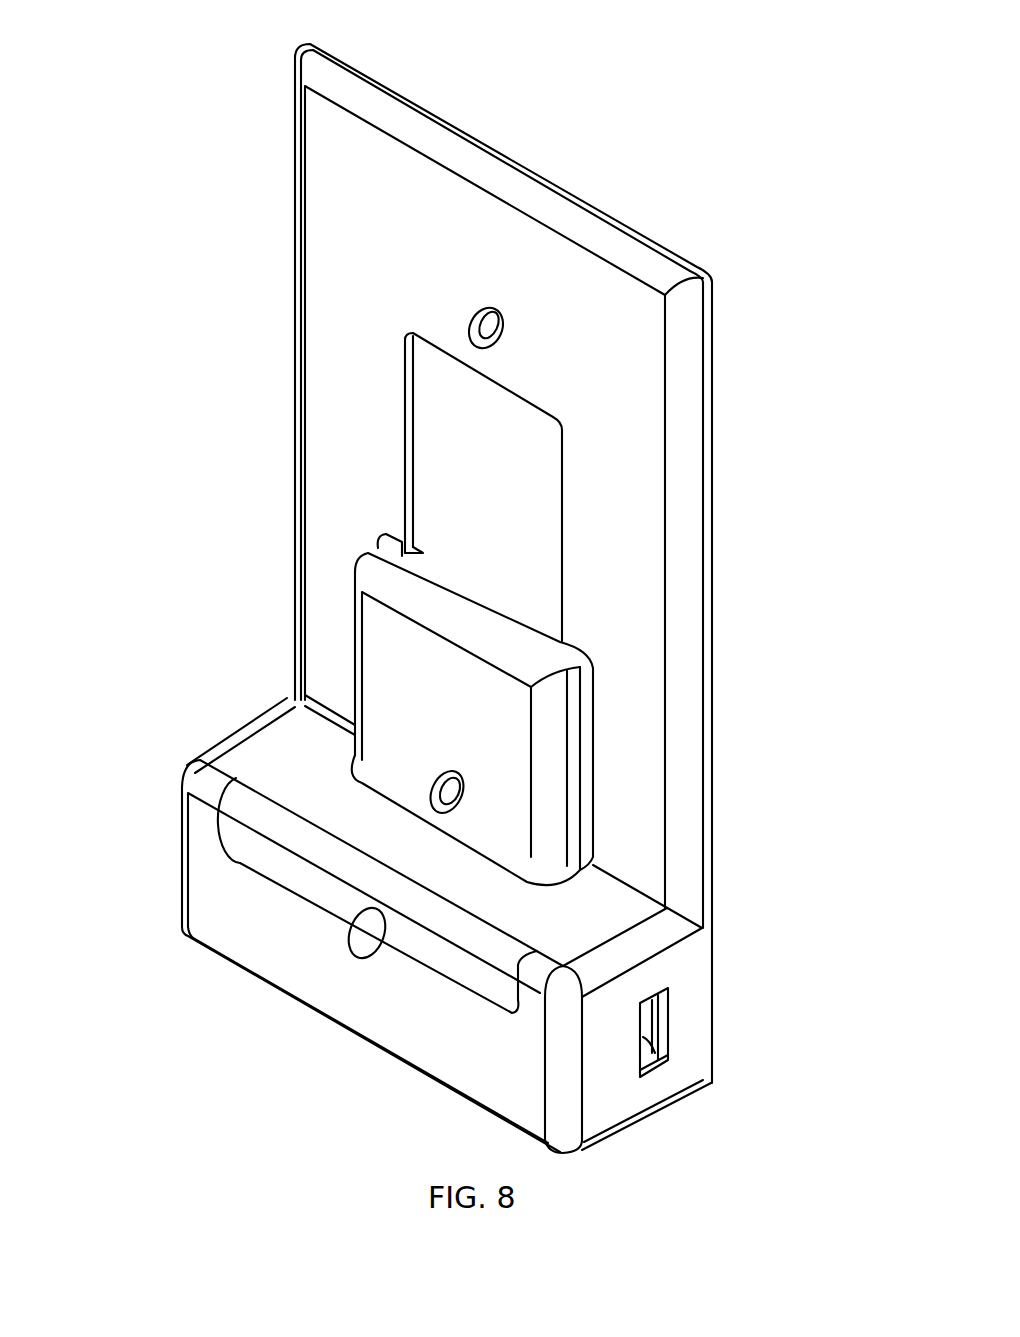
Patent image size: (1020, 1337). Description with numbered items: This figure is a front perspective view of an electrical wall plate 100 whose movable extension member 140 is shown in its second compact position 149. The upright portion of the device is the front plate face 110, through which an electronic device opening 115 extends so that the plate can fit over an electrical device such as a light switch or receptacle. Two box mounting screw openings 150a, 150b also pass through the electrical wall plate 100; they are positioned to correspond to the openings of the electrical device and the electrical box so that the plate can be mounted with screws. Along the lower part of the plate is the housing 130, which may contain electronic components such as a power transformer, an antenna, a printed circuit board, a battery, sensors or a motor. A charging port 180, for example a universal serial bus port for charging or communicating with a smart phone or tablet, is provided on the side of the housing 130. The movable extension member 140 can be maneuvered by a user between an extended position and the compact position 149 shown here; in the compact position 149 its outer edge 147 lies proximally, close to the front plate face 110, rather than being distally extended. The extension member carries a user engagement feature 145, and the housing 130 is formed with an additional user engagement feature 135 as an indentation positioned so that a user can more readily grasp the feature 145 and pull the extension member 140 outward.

The electrical wall plate 100 is at (613, 110).
The front plate face 110 is at (323, 133).
The electronic device opening 115 is at (434, 449).
The housing 130 is at (262, 750).
The user engagement feature 135 is at (373, 948).
The movable extension member 140 is at (156, 771).
The user engagement feature 145 is at (370, 927).
The outer edge 147 is at (267, 847).
The second compact position 149 is at (184, 827).
The box mounting screw opening 150a is at (456, 315).
The box mounting screw opening 150b is at (422, 767).
The charging port 180 is at (685, 1016).